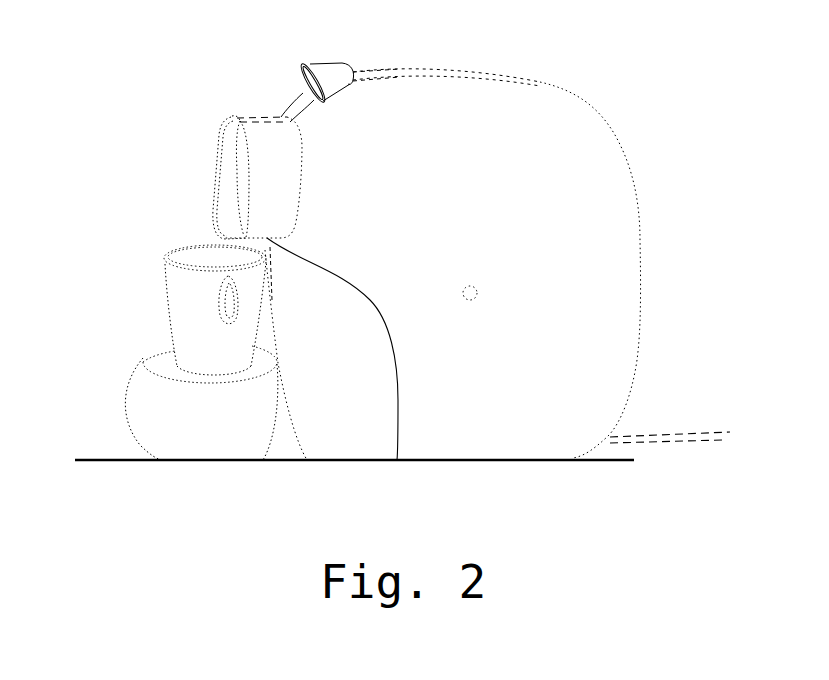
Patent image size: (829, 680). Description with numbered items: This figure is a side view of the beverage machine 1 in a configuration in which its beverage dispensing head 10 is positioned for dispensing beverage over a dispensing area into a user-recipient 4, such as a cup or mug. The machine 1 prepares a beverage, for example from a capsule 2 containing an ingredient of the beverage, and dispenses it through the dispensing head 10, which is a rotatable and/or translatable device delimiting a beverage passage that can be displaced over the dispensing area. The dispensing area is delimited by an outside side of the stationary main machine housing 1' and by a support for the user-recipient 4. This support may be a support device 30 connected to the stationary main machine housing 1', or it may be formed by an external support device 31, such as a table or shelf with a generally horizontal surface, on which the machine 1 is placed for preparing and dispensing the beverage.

The beverage machine 1 is at (434, 241).
The stationary main machine housing 1' is at (446, 51).
The capsule 2 is at (332, 74).
The beverage dispensing head 10 is at (228, 165).
The user-recipient 4 is at (173, 270).
The support device 30 is at (138, 373).
The external support device 31 is at (102, 460).